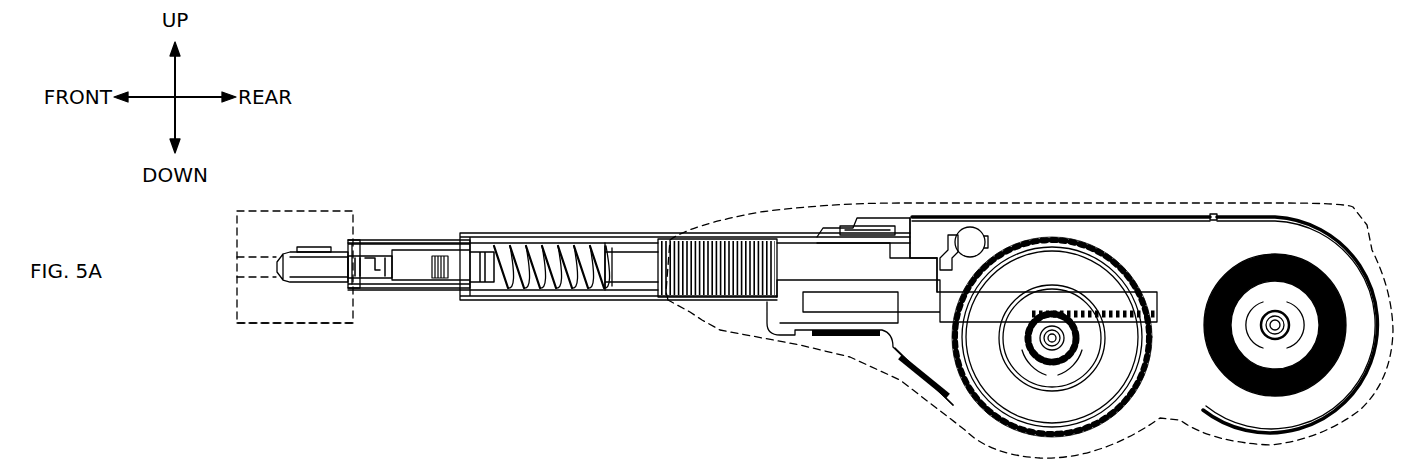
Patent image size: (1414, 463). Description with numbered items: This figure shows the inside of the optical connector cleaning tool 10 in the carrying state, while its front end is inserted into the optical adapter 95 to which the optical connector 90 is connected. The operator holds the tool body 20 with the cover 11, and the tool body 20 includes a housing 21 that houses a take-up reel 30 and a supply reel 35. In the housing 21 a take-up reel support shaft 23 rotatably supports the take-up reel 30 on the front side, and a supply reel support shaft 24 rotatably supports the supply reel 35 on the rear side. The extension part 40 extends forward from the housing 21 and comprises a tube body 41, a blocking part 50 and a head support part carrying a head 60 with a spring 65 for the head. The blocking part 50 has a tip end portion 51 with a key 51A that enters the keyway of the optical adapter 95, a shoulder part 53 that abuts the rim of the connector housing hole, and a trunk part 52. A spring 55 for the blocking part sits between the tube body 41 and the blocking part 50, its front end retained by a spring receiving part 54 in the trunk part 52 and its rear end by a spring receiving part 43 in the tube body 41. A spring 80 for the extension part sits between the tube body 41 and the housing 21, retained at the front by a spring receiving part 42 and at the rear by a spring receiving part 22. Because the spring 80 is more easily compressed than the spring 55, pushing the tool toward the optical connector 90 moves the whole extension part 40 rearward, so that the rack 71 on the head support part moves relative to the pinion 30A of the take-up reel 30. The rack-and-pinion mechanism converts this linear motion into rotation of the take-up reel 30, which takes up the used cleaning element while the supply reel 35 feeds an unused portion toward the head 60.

The optical connector cleaning tool 10 is at (790, 100).
The cover 11 is at (858, 216).
The tool body 20 is at (1143, 263).
The housing 21 is at (1177, 235).
The spring receiving part for the extension part 22 is at (770, 234).
The take-up reel support shaft 23 is at (1040, 345).
The supply reel support shaft 24 is at (1262, 335).
The take-up reel 30 is at (1050, 258).
The pinion 30A is at (1090, 322).
The supply reel 35 is at (1277, 234).
The extension part 40 is at (629, 181).
The tube body 41 is at (632, 235).
The spring receiving part for the extension part 42 is at (667, 238).
The spring receiving part for the blocking part 43 is at (592, 248).
The blocking part 50 is at (373, 217).
The tip end portion 51 is at (312, 225).
The key 51A is at (313, 248).
The trunk part 52 is at (410, 240).
The shoulder part 53 is at (352, 248).
The spring receiving part for the blocking part 54 is at (500, 236).
The spring for the blocking part 55 is at (545, 248).
The head 60 is at (338, 282).
The spring for the head 65 is at (438, 282).
The rack 71 is at (993, 300).
The spring for the extension part 80 is at (718, 250).
The optical connector 90 is at (252, 232).
The optical adapter 95 is at (277, 326).